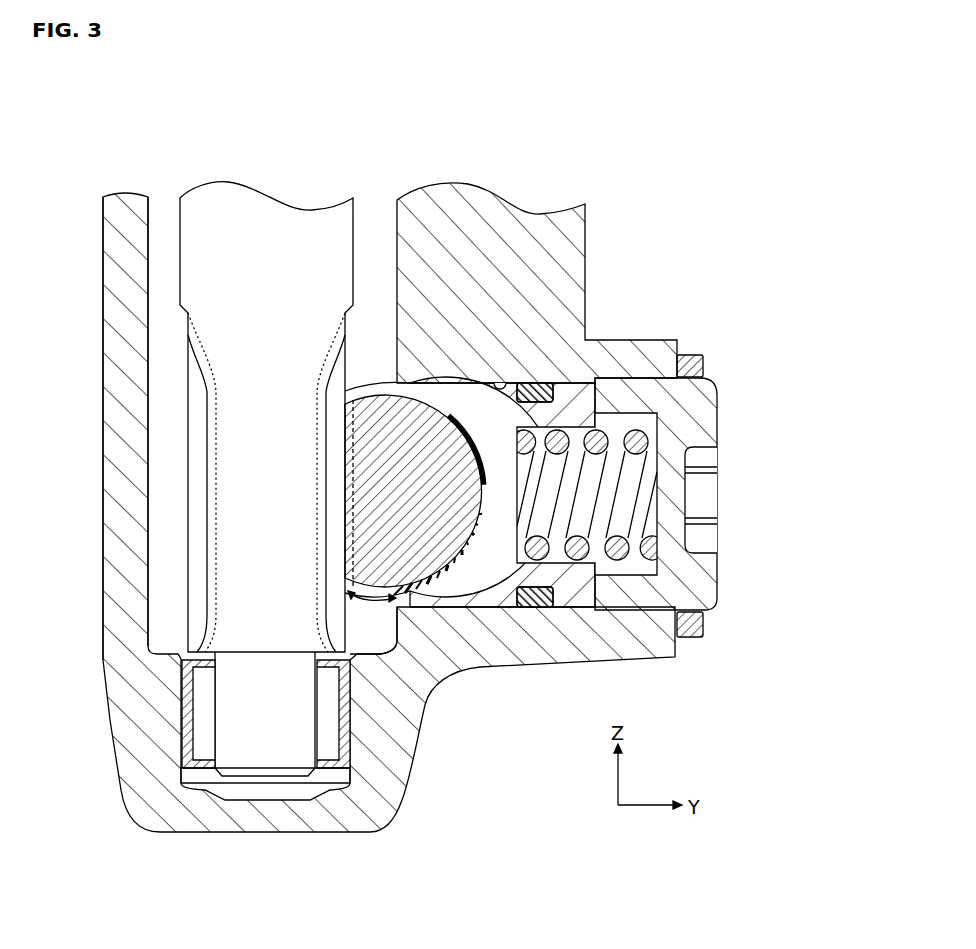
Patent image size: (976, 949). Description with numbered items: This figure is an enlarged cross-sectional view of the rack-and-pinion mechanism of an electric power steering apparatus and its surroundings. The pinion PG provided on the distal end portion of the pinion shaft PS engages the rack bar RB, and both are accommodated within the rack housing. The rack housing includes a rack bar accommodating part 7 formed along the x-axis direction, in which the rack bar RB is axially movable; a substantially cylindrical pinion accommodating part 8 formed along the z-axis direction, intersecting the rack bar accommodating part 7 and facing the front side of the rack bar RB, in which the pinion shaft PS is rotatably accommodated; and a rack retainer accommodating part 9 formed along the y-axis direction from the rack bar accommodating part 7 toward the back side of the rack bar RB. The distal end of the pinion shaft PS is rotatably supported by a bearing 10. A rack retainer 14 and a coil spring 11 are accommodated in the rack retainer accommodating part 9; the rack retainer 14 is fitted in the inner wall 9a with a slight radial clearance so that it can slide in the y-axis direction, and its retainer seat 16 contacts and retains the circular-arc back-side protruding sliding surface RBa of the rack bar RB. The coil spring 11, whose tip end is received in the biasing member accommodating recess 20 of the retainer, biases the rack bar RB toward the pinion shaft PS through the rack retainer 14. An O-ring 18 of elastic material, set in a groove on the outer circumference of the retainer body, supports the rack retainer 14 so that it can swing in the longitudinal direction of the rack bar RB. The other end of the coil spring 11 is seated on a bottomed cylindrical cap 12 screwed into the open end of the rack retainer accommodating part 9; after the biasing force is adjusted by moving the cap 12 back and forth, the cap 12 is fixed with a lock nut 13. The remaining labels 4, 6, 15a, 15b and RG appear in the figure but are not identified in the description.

The bracket 4 is at (362, 606).
The housing 6 is at (508, 219).
The rack bar accommodating part 7 is at (375, 388).
The pinion accommodating part 8 is at (150, 206).
The rack retainer accommodating part 9 is at (378, 612).
The inner wall 9a is at (517, 385).
The bearing 10 is at (403, 793).
The coil spring 11 is at (690, 637).
The cap 12 is at (707, 410).
The lock nut 13 is at (704, 364).
The rack retainer 14 is at (486, 592).
The pressing member 15a is at (478, 390).
The spring seat 15b is at (487, 480).
The retainer seat 16 is at (441, 390).
The O-ring 18 is at (533, 608).
The biasing member accommodating recess 20 is at (605, 412).
The pinion shaft PS is at (275, 225).
The pinion PG is at (197, 389).
The ball groove RG is at (347, 453).
The rack bar RB is at (425, 588).
The back-side protruding sliding surface RBa is at (447, 598).